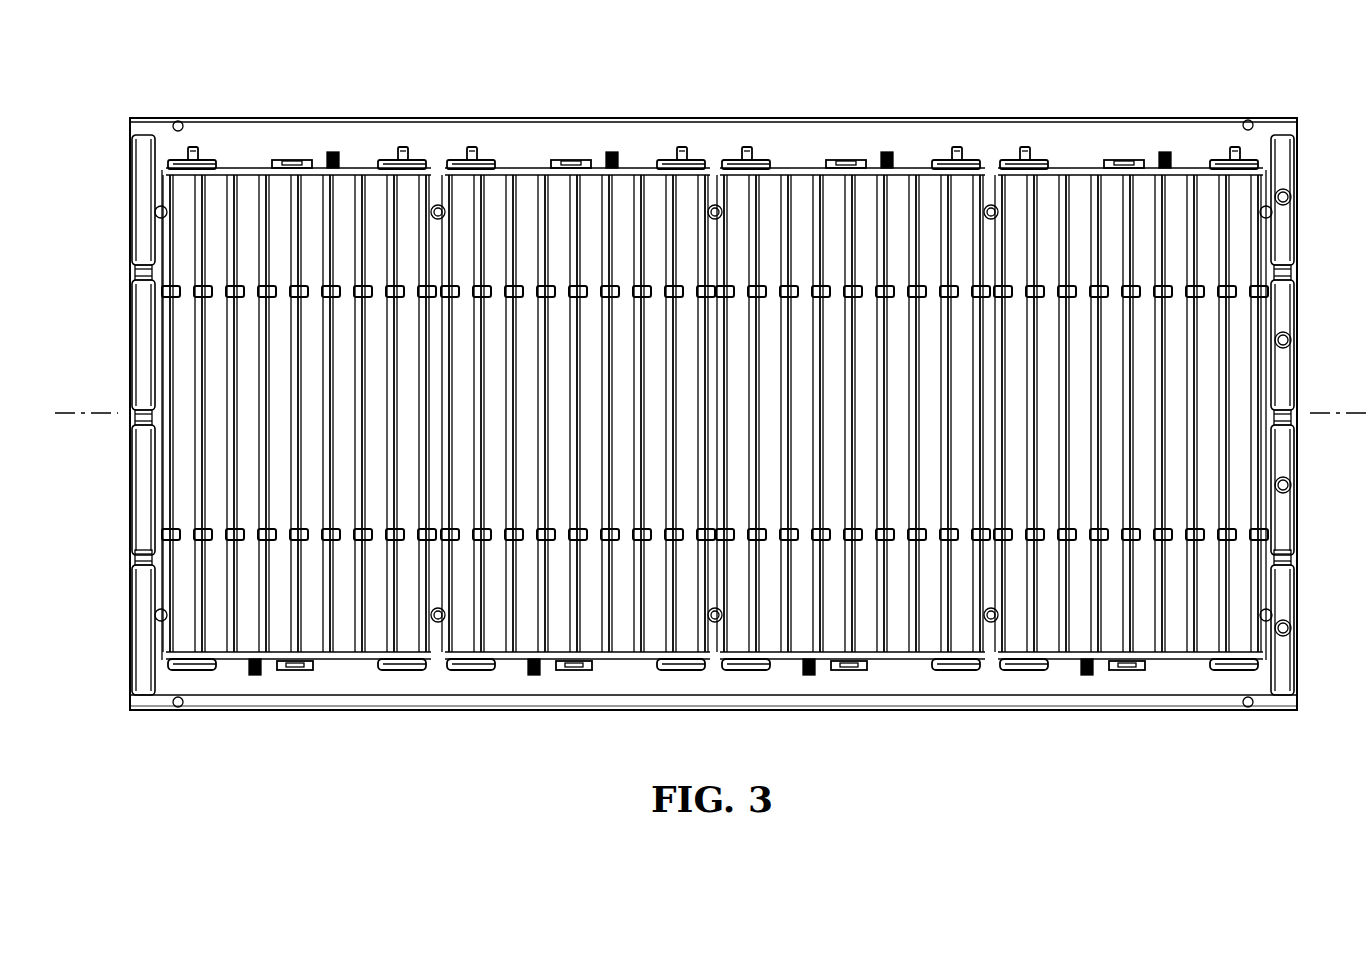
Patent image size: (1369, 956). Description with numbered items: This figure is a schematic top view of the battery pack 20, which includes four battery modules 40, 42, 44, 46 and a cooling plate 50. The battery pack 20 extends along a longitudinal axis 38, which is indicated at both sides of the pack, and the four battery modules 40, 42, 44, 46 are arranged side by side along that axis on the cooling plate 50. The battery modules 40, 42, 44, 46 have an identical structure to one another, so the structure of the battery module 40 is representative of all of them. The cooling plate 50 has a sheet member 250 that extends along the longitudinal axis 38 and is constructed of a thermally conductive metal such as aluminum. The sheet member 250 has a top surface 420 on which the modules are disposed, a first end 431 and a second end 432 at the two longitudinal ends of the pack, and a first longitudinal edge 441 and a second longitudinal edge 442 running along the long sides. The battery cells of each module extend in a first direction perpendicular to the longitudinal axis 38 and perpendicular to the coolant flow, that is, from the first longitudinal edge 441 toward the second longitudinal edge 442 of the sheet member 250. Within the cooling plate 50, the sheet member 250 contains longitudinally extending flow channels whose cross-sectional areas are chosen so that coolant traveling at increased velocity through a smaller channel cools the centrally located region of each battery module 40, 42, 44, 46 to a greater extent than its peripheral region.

The battery pack 20 is at (677, 78).
The longitudinal axis 38 is at (90, 410).
The battery module 40 is at (1083, 172).
The battery module 42 is at (801, 172).
The battery module 44 is at (525, 172).
The battery module 46 is at (246, 168).
The cooling plate 50 is at (1021, 700).
The sheet member 250 is at (910, 119).
The top surface 420 is at (580, 133).
The first end 431 is at (1298, 125).
The second end 432 is at (128, 127).
The first longitudinal edge 441 is at (1168, 118).
The second longitudinal edge 442 is at (1145, 710).